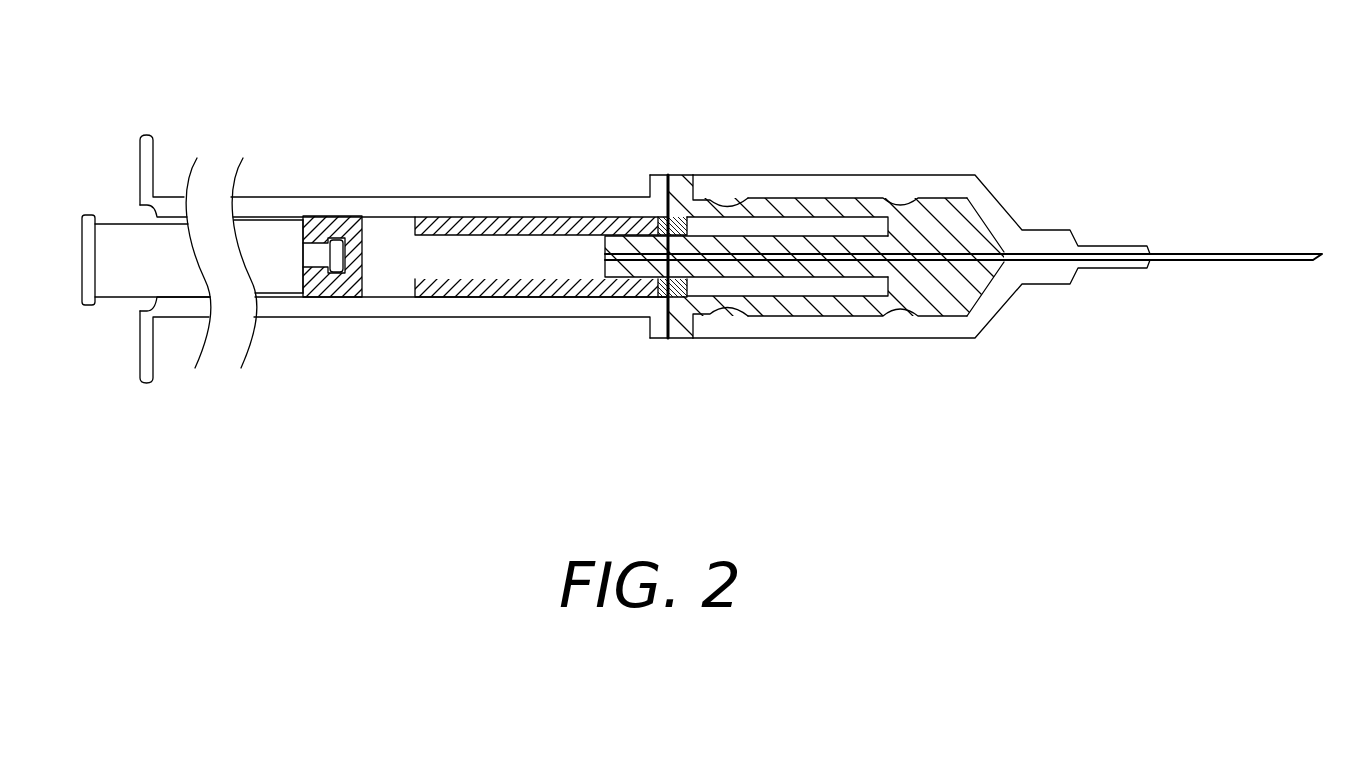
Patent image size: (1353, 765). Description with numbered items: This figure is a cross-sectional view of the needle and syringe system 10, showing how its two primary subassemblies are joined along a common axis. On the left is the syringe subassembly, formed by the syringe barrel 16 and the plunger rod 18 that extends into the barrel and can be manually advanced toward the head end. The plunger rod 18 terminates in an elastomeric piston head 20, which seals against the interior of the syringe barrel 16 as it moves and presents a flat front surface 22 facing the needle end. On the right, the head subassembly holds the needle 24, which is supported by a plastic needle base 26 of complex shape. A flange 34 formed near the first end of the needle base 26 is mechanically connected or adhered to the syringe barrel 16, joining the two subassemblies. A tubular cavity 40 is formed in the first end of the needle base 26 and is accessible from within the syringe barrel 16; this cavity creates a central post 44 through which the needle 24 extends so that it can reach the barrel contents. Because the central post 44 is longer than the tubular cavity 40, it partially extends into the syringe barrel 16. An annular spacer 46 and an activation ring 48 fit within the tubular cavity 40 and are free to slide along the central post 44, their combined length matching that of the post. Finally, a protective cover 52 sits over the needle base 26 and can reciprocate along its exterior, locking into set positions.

The needle and syringe system 10 is at (1072, 80).
The syringe barrel 16 is at (331, 196).
The plunger rod 18 is at (283, 265).
The elastomeric piston head 20 is at (362, 290).
The flat front surface 22 is at (368, 237).
The needle 24 is at (1270, 253).
The needle base 26 is at (940, 297).
The flange 34 is at (677, 338).
The tubular cavity 40 is at (722, 230).
The central post 44 is at (620, 267).
The annular spacer 46 is at (556, 220).
The activation ring 48 is at (655, 222).
The protective cover 52 is at (872, 177).